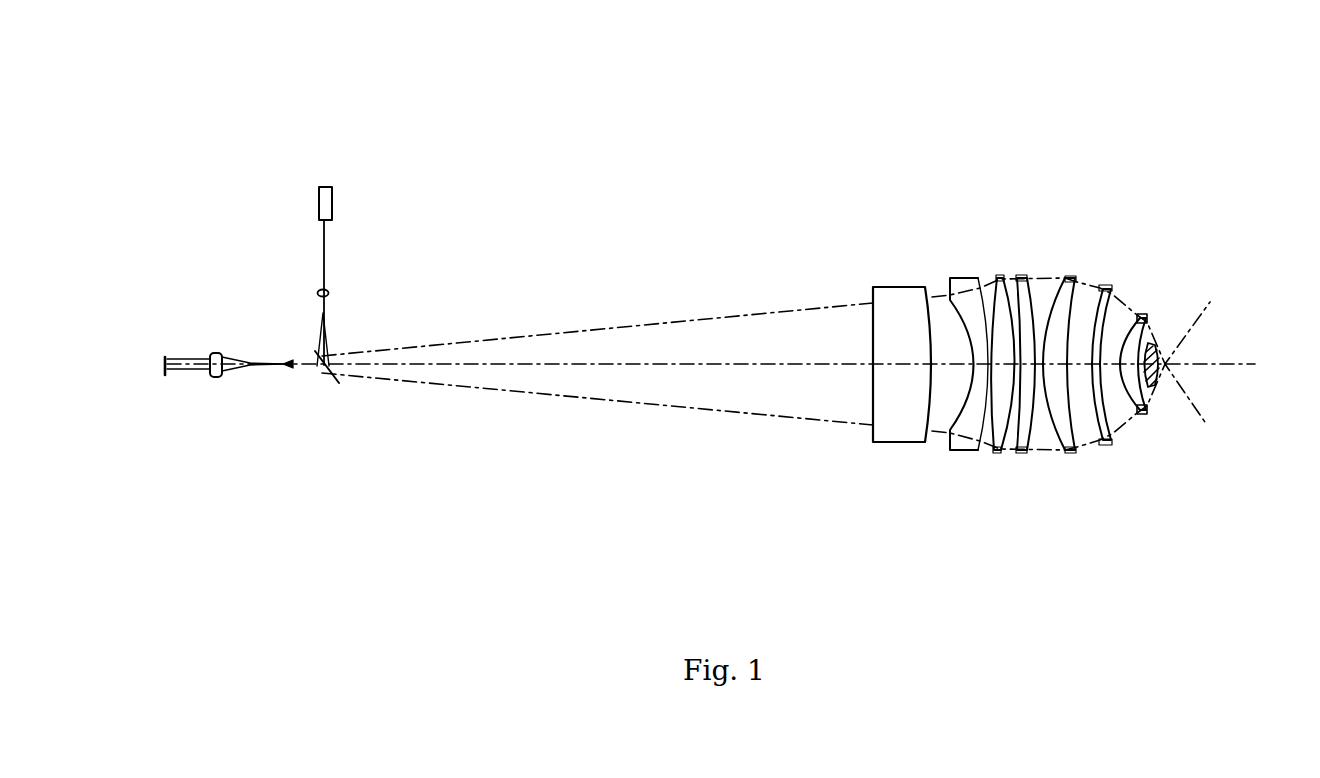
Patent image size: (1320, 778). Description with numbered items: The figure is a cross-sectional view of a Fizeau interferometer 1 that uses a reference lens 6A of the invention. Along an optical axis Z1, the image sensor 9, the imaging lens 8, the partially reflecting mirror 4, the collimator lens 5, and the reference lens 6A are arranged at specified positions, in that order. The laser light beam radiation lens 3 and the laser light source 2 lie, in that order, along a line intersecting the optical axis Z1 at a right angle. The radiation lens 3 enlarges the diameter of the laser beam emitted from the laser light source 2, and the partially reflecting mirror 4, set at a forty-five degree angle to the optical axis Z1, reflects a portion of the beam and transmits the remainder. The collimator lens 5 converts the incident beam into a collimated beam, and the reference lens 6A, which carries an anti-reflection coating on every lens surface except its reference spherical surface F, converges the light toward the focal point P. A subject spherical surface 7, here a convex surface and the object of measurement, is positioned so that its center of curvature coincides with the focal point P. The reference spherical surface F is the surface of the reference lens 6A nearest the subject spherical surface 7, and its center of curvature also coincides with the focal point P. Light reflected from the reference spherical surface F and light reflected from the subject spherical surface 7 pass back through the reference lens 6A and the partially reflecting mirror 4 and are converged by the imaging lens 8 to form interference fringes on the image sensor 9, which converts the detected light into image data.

The Fizeau interferometer 1 is at (828, 109).
The laser light source 2 is at (332, 203).
The laser light beam radiation lens 3 is at (330, 293).
The partially reflecting mirror 4 is at (318, 355).
The collimator lens 5 is at (898, 298).
The reference lens 6A is at (1147, 263).
The subject spherical surface 7 is at (1147, 334).
The reference spherical surface F is at (1147, 341).
The focal point P is at (1165, 368).
The imaging lens 8 is at (216, 352).
The image sensor 9 is at (165, 355).
The optical axis Z1 is at (1240, 367).